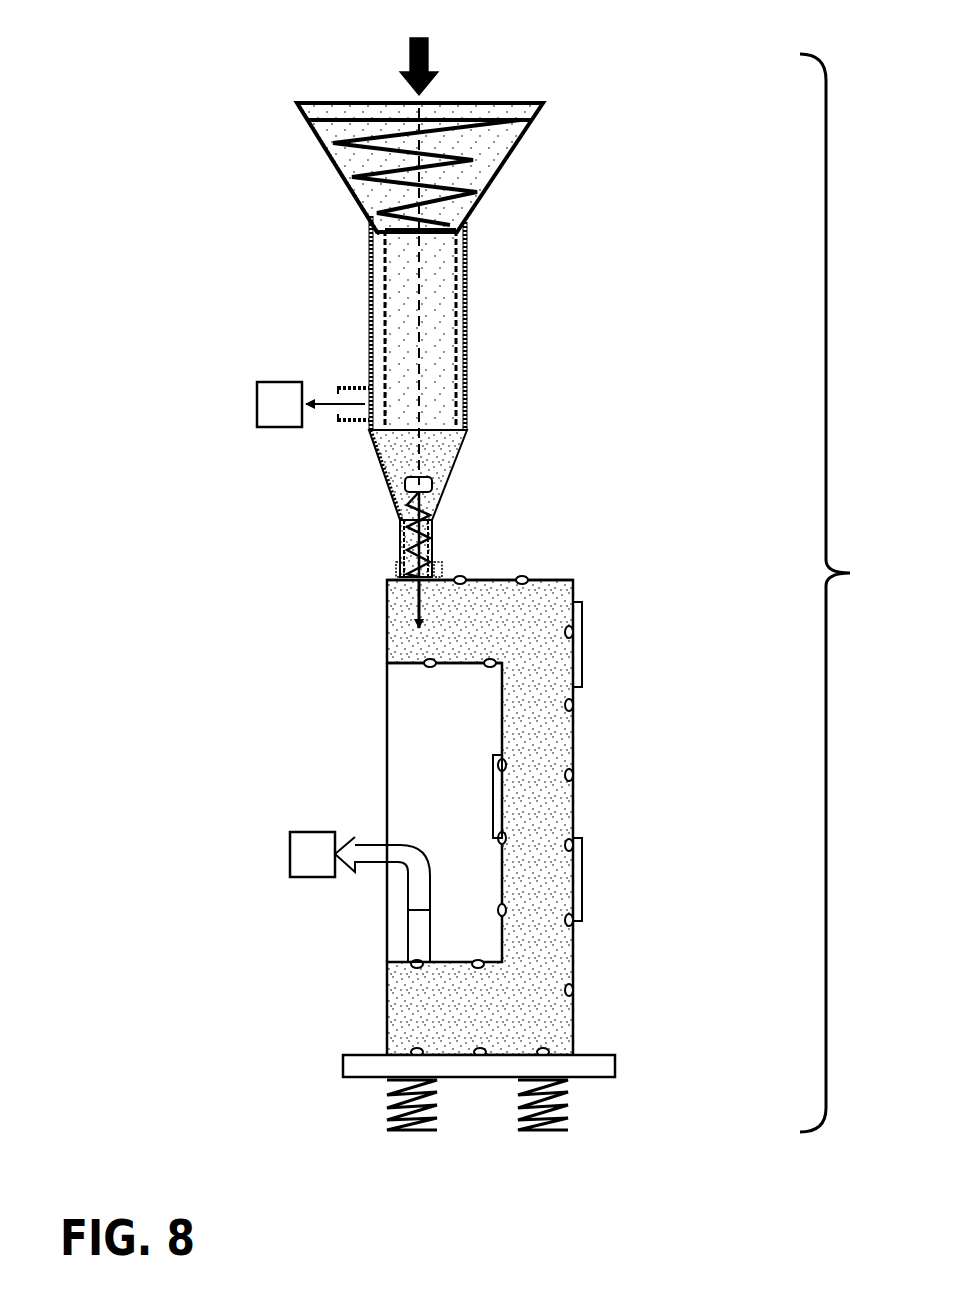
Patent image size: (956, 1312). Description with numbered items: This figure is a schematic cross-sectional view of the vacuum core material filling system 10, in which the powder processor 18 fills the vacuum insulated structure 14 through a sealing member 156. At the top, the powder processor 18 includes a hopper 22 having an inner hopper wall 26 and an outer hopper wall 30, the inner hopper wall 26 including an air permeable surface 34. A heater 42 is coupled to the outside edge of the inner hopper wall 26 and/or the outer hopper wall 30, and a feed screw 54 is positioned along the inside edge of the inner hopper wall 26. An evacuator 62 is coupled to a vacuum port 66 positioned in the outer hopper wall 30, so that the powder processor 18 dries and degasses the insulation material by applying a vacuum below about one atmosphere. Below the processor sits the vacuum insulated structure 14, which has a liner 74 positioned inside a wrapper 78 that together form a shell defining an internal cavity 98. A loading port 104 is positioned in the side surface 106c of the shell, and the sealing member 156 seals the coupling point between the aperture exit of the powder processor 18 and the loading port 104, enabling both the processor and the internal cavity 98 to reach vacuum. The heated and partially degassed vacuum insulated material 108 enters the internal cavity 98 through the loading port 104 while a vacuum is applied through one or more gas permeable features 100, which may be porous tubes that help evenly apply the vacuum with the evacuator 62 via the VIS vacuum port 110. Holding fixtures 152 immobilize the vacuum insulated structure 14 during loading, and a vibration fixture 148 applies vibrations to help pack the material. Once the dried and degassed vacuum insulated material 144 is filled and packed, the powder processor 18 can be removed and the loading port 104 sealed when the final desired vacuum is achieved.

The vacuum core material filling system 10 is at (843, 593).
The vacuum insulated structure 14 is at (501, 787).
The powder processor 18 is at (383, 453).
The hopper 22 is at (450, 133).
The inner hopper wall 26 is at (455, 355).
The outer hopper wall 30 is at (468, 288).
The air permeable surface 34 is at (391, 337).
The heater 42 is at (455, 152).
The feed screw 54 is at (407, 530).
The evacuator 62 is at (257, 400).
The vacuum port 66 is at (355, 390).
The liner 74 is at (403, 663).
The wrapper 78 is at (573, 580).
The internal cavity 98 is at (548, 972).
The gas permeable feature 100 is at (478, 960).
The loading port 104 is at (403, 591).
The side surface 106c is at (516, 580).
The vacuum insulated material 108 is at (437, 610).
The VIS vacuum port 110 is at (416, 945).
The dried and degassed vacuum insulated material 144 is at (525, 1017).
The vibration fixture 148 is at (600, 1065).
The holding fixture 152 is at (583, 875).
The sealing member 156 is at (397, 565).